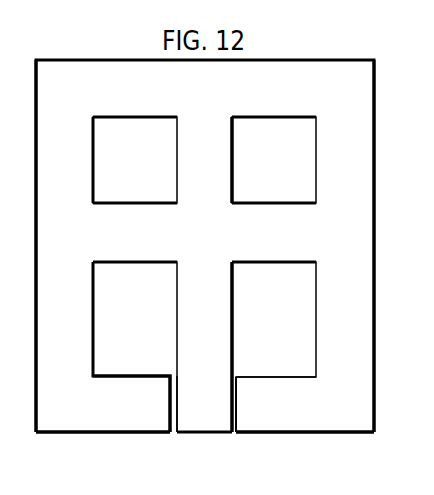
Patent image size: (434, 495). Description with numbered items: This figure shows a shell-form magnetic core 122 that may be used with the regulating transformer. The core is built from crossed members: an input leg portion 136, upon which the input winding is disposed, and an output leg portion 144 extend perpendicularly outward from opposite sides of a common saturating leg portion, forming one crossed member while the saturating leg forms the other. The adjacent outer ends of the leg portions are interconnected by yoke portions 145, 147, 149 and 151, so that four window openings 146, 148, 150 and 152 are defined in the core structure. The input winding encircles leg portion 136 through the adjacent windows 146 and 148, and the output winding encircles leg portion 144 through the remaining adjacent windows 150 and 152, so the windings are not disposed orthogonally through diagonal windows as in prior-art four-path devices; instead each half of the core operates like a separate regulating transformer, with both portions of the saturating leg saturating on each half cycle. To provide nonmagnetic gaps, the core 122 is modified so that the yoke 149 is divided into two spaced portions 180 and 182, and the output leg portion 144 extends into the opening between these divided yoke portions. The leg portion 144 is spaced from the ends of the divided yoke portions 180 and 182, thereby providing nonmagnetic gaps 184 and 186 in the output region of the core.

The magnetic core 122 is at (346, 51).
The yoke portion 145 is at (187, 88).
The window opening 146 is at (92, 157).
The window opening 148 is at (316, 157).
The leg portion 136 is at (233, 183).
The window opening 150 is at (92, 328).
The window opening 152 is at (316, 319).
The leg portion 144 is at (233, 342).
The yoke portion 180 is at (133, 418).
The yoke portion 182 is at (280, 418).
The nonmagnetic gap 184 is at (174, 436).
The nonmagnetic gap 186 is at (235, 436).
The yoke portion 151 is at (34, 262).
The yoke portion 147 is at (376, 262).
The yoke portion 149 is at (95, 434).